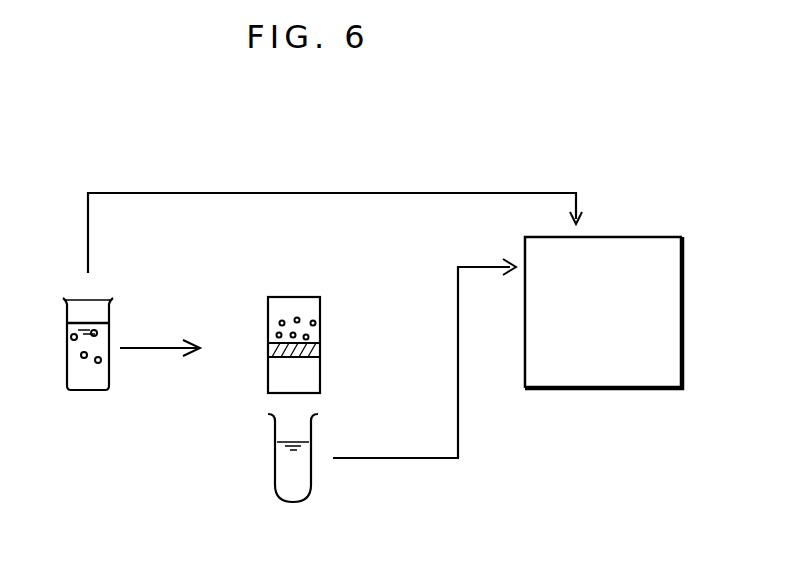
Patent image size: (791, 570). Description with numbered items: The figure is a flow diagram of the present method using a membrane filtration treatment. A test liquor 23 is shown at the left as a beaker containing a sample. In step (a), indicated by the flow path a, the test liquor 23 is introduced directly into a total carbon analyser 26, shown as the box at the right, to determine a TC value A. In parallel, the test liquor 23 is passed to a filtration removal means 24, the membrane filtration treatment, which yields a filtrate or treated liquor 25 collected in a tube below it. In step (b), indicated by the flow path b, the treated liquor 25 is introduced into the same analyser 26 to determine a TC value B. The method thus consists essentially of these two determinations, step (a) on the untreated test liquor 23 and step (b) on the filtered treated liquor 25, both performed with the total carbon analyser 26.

The step a is at (390, 192).
The step b is at (418, 460).
The test liquor 23 is at (80, 377).
The filtration removal means 24 is at (257, 358).
The filtrate (treated liquor) 25 is at (297, 490).
The total carbon analyser 26 is at (633, 389).